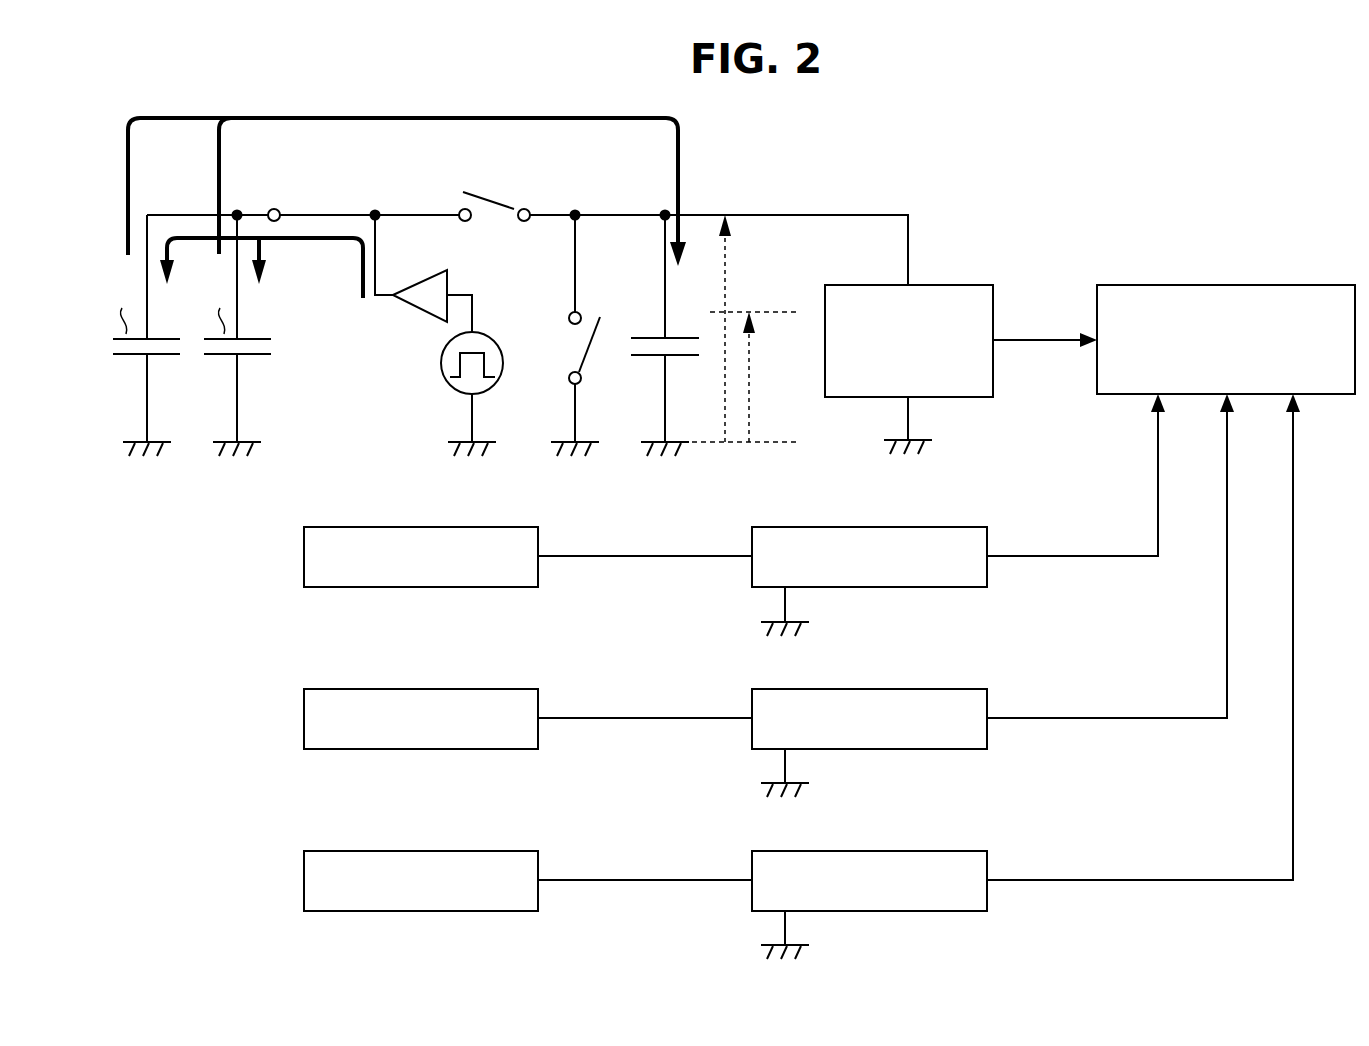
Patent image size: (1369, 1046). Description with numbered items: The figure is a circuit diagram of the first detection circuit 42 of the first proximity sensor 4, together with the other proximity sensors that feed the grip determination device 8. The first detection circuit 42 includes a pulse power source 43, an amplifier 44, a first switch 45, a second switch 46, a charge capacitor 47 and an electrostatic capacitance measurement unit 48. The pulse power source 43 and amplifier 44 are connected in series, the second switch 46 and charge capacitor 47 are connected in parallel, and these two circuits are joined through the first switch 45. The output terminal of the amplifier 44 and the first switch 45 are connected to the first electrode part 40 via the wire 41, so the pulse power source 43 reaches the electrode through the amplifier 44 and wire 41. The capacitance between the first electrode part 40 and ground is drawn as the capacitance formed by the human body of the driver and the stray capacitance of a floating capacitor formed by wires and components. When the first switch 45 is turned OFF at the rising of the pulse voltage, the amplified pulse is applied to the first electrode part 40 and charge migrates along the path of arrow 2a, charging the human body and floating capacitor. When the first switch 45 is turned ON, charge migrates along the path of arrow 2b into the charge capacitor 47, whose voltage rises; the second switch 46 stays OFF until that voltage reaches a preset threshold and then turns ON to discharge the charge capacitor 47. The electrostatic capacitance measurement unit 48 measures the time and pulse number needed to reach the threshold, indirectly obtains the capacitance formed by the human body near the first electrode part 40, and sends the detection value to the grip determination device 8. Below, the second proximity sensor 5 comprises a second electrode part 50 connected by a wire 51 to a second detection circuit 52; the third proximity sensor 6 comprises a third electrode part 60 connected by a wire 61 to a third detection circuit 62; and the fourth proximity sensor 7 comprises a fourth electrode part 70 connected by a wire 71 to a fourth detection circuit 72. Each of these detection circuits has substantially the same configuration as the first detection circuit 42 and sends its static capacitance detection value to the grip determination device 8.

The arrow 2a is at (320, 242).
The arrow 2b is at (282, 116).
The first sensor 4 is at (1032, 256).
The second proximity sensor 5 is at (1034, 522).
The third proximity sensor 6 is at (1034, 681).
The fourth proximity sensor 7 is at (1034, 842).
The grip determination device 8 is at (1233, 288).
The first electrode part 40 is at (274, 208).
The wire 41 is at (318, 212).
The first detection circuit 42 is at (895, 140).
The pulse power source 43 is at (486, 336).
The amplifier 44 is at (412, 284).
The first switch 45 is at (472, 192).
The second switch 46 is at (582, 346).
The charge capacitor 47 is at (640, 336).
The electrostatic capacitance measurement unit 48 is at (954, 286).
The second electrode part 50 is at (503, 530).
The wire 51 is at (683, 555).
The second detection circuit 52 is at (952, 530).
The third electrode part 60 is at (503, 692).
The wire 61 is at (683, 717).
The third detection circuit 62 is at (952, 692).
The fourth electrode part 70 is at (503, 854).
The wire 71 is at (683, 879).
The fourth detection circuit 72 is at (952, 854).